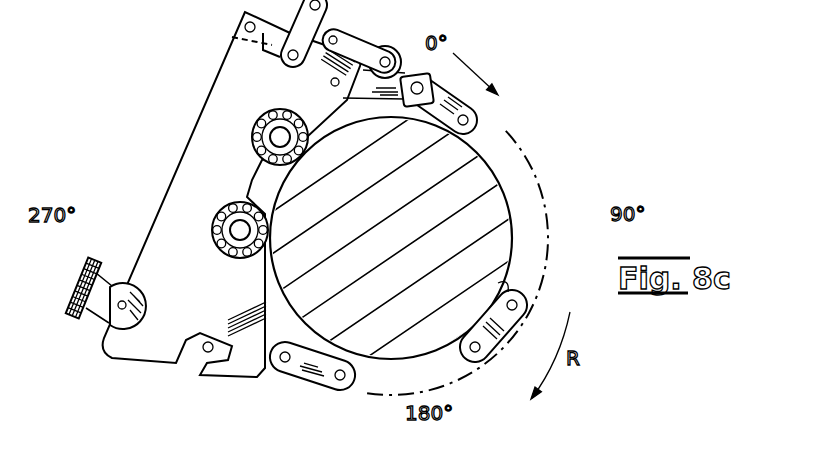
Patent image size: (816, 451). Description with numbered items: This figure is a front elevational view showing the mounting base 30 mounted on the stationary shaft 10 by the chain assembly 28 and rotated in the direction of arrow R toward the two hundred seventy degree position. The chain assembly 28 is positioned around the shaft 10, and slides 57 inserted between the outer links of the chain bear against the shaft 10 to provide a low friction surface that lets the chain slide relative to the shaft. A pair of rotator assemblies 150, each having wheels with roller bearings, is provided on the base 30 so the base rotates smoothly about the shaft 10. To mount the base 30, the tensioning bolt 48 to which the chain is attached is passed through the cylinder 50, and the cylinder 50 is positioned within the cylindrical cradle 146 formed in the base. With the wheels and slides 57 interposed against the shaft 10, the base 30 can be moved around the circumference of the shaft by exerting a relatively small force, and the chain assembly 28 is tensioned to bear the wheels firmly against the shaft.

The mounting base 30 is at (186, 101).
The rotator assembly 150 is at (251, 104).
The shaft 10 is at (401, 249).
The slide 57 is at (468, 124).
The chain assembly 28 is at (536, 176).
The tensioning bolt 48 is at (72, 281).
The cylinder 50 is at (110, 315).
The cylindrical cradle 146 is at (143, 297).